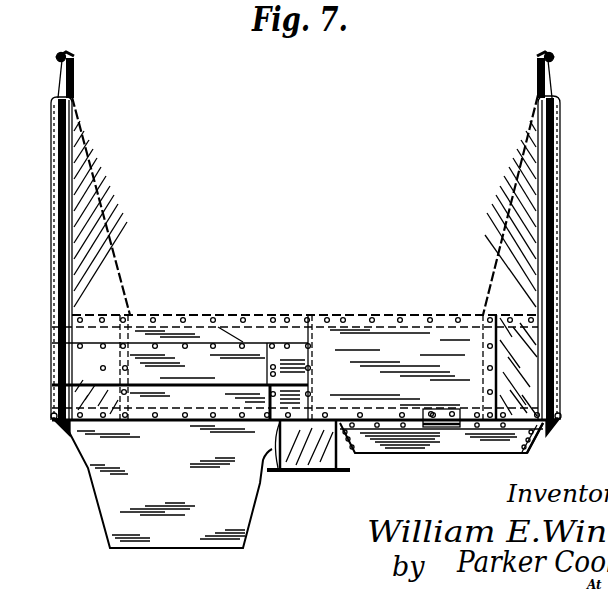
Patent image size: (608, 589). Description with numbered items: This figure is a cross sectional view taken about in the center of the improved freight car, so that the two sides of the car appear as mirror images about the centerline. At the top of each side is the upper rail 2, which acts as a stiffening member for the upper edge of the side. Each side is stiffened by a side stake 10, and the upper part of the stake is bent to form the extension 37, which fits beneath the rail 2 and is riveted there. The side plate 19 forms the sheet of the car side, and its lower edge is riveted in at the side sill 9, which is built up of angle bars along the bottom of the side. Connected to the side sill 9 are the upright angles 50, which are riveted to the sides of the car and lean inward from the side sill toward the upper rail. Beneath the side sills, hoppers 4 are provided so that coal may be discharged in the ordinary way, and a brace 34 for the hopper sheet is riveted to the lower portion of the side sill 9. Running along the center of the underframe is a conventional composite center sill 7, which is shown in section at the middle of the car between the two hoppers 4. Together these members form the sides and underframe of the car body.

The upper rail 2 is at (60, 55).
The stake extension 37 is at (66, 66).
The side stake 10 is at (52, 220).
The side plate 19 is at (52, 262).
The upright angle 50 is at (70, 180).
The side sill 9 is at (60, 425).
The hopper 4 is at (118, 492).
The center sill 7 is at (283, 472).
The brace 34 is at (536, 446).